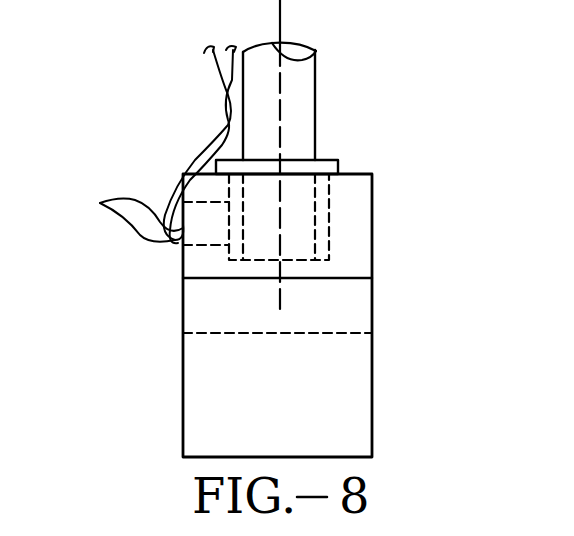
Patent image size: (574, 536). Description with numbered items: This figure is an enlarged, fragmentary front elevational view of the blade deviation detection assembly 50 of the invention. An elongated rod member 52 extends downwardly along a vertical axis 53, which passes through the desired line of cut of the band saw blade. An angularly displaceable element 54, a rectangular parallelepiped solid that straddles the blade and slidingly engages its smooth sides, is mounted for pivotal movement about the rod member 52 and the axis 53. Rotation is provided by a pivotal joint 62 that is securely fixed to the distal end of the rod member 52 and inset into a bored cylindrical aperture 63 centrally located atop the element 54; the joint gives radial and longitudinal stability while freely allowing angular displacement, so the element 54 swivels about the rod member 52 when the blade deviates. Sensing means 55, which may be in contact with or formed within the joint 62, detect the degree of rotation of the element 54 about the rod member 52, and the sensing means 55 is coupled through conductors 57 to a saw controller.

The blade deviation detection assembly 50 is at (355, 101).
The elongated rod member 52 is at (243, 143).
The vertical axis 53 is at (280, 22).
The angularly displaceable element 54 is at (373, 362).
The sensing means 55 is at (205, 245).
The conductors 57 is at (100, 203).
The pivotal joint 62 is at (340, 160).
The bored cylindrical aperture 63 is at (326, 207).